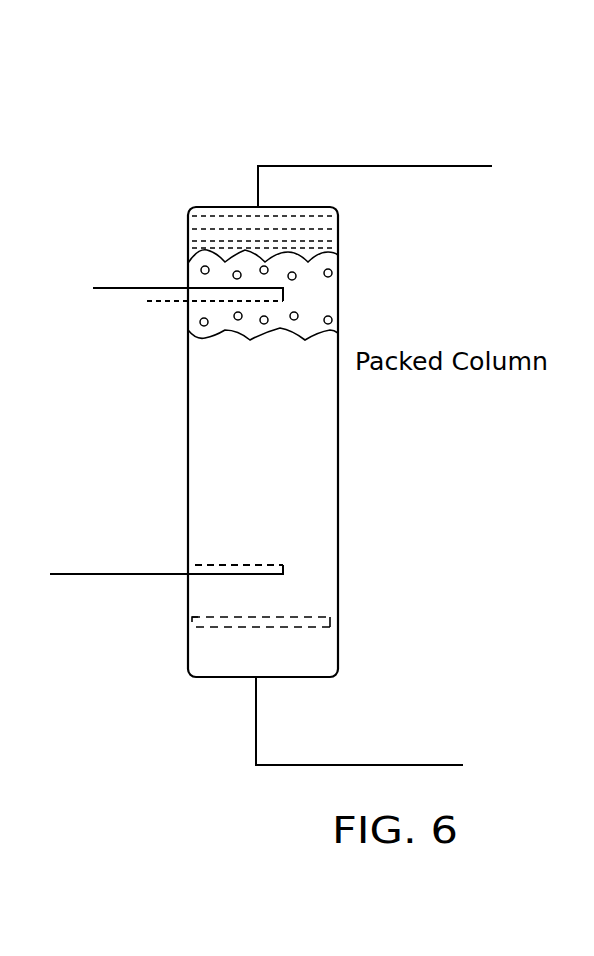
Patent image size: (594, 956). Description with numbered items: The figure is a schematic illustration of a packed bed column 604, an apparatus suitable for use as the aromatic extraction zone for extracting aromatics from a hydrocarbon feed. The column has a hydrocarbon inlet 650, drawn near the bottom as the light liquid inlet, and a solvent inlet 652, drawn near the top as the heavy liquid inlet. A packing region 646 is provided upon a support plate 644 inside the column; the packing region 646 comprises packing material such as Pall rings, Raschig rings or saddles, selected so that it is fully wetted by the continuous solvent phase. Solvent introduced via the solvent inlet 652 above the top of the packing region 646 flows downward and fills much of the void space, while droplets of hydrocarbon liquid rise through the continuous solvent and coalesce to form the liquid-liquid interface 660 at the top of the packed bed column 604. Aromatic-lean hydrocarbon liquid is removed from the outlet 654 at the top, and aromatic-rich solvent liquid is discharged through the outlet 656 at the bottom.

The packed bed column 604 is at (108, 91).
The outlet 654 is at (386, 171).
The solvent inlet 652 is at (146, 273).
The liquid-liquid interface 660 is at (359, 287).
The packing region 646 is at (312, 449).
The hydrocarbon inlet 650 is at (160, 553).
The support plate 644 is at (330, 619).
The outlet 656 is at (402, 721).